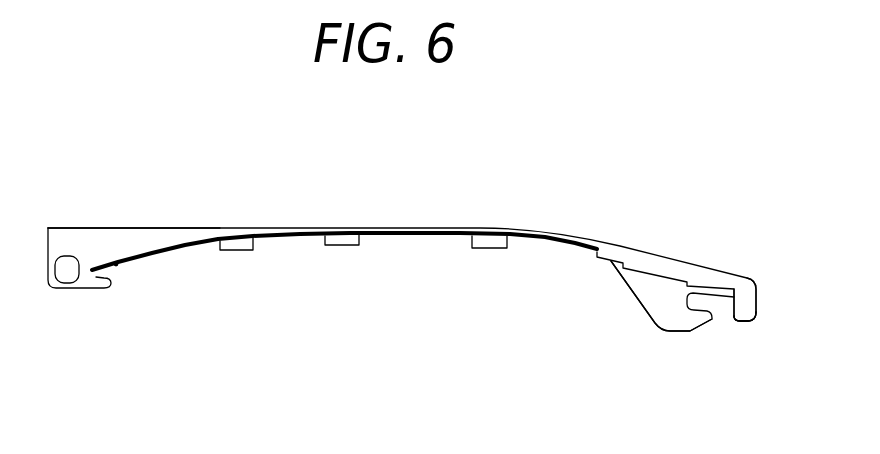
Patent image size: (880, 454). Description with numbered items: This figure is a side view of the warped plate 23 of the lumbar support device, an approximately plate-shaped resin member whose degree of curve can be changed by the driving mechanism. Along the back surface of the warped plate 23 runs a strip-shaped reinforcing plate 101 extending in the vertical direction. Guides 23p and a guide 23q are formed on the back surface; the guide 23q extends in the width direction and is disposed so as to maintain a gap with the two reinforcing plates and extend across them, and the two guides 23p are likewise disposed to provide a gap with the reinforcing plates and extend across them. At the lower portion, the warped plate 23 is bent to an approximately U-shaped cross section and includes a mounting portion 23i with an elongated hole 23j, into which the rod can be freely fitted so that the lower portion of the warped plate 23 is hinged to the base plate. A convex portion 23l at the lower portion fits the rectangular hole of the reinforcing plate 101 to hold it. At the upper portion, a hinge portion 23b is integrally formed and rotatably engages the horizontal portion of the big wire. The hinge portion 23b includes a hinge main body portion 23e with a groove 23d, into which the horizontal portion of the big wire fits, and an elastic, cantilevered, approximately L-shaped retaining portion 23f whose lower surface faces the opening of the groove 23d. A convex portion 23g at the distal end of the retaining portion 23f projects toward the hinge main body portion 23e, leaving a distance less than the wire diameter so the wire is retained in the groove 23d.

The warped plate 23 is at (402, 235).
The reinforcing plate 101 is at (344, 259).
The mounting portion 23i is at (134, 212).
The hole 23j is at (73, 295).
The convex portion 23l is at (131, 286).
The guide 23p is at (289, 263).
The guide 23q is at (496, 262).
The groove 23d is at (706, 266).
The convex portion 23g is at (745, 280).
The hinge main body portion 23e is at (661, 324).
The retaining portion 23f is at (733, 350).
The hinge portion 23b is at (747, 383).